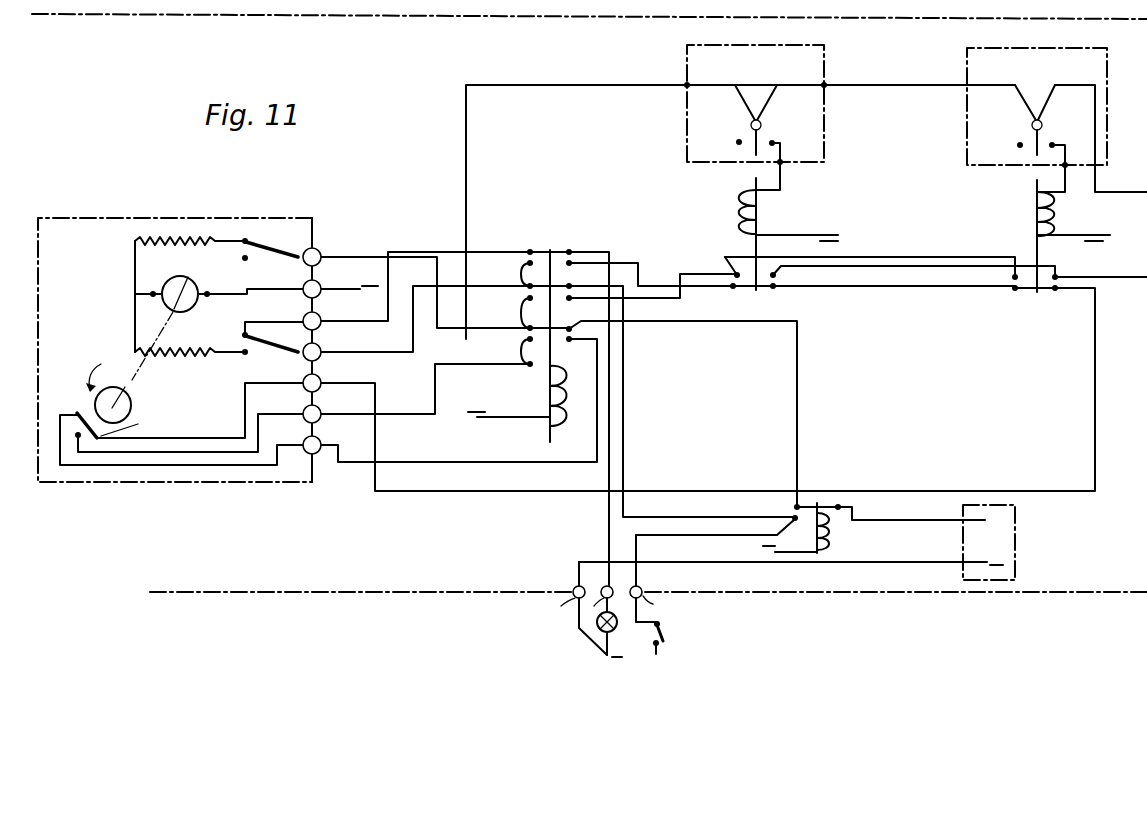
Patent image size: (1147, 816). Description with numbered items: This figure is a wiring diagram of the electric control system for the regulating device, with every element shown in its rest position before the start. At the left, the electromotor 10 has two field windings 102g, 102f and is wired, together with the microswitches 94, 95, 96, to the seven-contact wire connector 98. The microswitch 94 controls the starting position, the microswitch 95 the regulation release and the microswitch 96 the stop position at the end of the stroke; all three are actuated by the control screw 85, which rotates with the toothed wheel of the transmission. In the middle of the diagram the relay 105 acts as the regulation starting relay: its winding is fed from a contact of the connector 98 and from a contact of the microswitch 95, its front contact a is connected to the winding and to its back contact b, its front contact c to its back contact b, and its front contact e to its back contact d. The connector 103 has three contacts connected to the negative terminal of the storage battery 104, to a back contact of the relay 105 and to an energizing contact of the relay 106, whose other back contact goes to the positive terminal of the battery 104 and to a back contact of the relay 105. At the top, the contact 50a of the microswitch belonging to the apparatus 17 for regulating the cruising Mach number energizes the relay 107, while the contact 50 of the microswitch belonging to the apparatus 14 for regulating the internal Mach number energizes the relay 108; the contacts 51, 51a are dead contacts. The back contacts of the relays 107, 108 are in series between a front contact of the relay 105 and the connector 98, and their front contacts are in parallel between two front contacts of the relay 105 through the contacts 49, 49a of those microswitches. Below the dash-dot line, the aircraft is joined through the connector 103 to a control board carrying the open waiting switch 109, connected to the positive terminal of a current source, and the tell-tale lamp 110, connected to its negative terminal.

The electromotor 10 is at (171, 314).
The apparatus for regulating the internal Mach number 14 is at (697, 60).
The apparatus for regulating the cruising Mach number 17 is at (1100, 65).
The contact stud 49 is at (762, 120).
The contact stud 49a is at (1043, 121).
The contact stud 50 is at (773, 142).
The contact stud 50a is at (1053, 143).
The dead contact stud 51 is at (738, 142).
The dead contact stud 51a is at (1018, 145).
The control screw 85 is at (108, 385).
The microswitch 94 is at (263, 350).
The microswitch 95 is at (85, 443).
The microswitch 96 is at (277, 247).
The wire connector 98 is at (328, 206).
The field winding 102g is at (190, 240).
The field winding 102f is at (190, 356).
The connector 103 is at (603, 577).
The storage battery 104 is at (1015, 541).
The relay 105 is at (562, 424).
The relay 106 is at (828, 541).
The relay 107 is at (1025, 216).
The relay 108 is at (745, 206).
The waiting switch 109 is at (665, 635).
The tell-tale lamp 110 is at (598, 626).